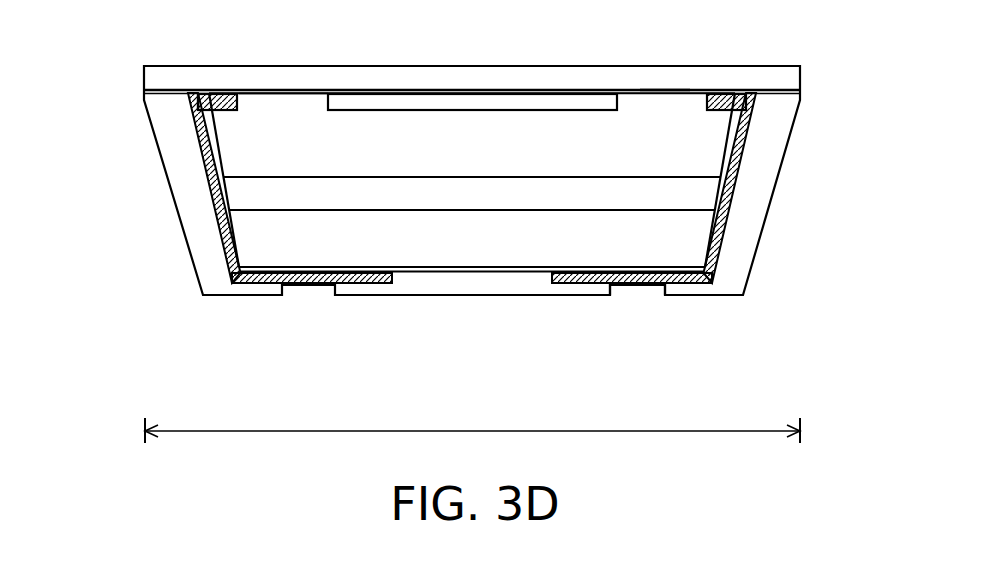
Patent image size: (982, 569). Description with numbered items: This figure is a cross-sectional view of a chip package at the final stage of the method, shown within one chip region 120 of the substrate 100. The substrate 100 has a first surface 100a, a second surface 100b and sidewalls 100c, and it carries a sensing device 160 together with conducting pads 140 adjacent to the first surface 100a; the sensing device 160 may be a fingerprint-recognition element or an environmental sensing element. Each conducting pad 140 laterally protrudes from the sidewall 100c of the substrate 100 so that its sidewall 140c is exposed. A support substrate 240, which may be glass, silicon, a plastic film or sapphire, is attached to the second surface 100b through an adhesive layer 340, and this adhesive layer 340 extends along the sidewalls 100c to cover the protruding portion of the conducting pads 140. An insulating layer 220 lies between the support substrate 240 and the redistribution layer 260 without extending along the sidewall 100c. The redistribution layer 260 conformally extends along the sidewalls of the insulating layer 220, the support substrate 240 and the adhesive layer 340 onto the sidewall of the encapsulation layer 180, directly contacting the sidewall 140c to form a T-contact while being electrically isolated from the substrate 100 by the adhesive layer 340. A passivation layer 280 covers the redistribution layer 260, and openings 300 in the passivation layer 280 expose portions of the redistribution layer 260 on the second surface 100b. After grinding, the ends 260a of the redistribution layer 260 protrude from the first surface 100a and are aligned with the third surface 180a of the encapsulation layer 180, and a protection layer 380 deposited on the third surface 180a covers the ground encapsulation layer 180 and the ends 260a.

The substrate 100 is at (497, 154).
The first surface 100a is at (293, 93).
The second surface 100b is at (473, 180).
The sidewall 100c is at (215, 145).
The chip region 120 is at (472, 419).
The conducting pad 140 is at (196, 99).
The sidewall of conducting pad 140c is at (192, 105).
The sensing device 160 is at (383, 95).
The encapsulation layer 180 is at (582, 92).
The third surface 180a is at (660, 88).
The insulating layer 220 is at (708, 268).
The support substrate 240 is at (707, 237).
The redistribution layer 260 is at (747, 148).
The end of redistribution layer 260a is at (755, 88).
The passivation layer 280 is at (585, 288).
The opening 300 is at (615, 288).
The adhesive layer 340 is at (710, 193).
The protection layer 380 is at (787, 79).